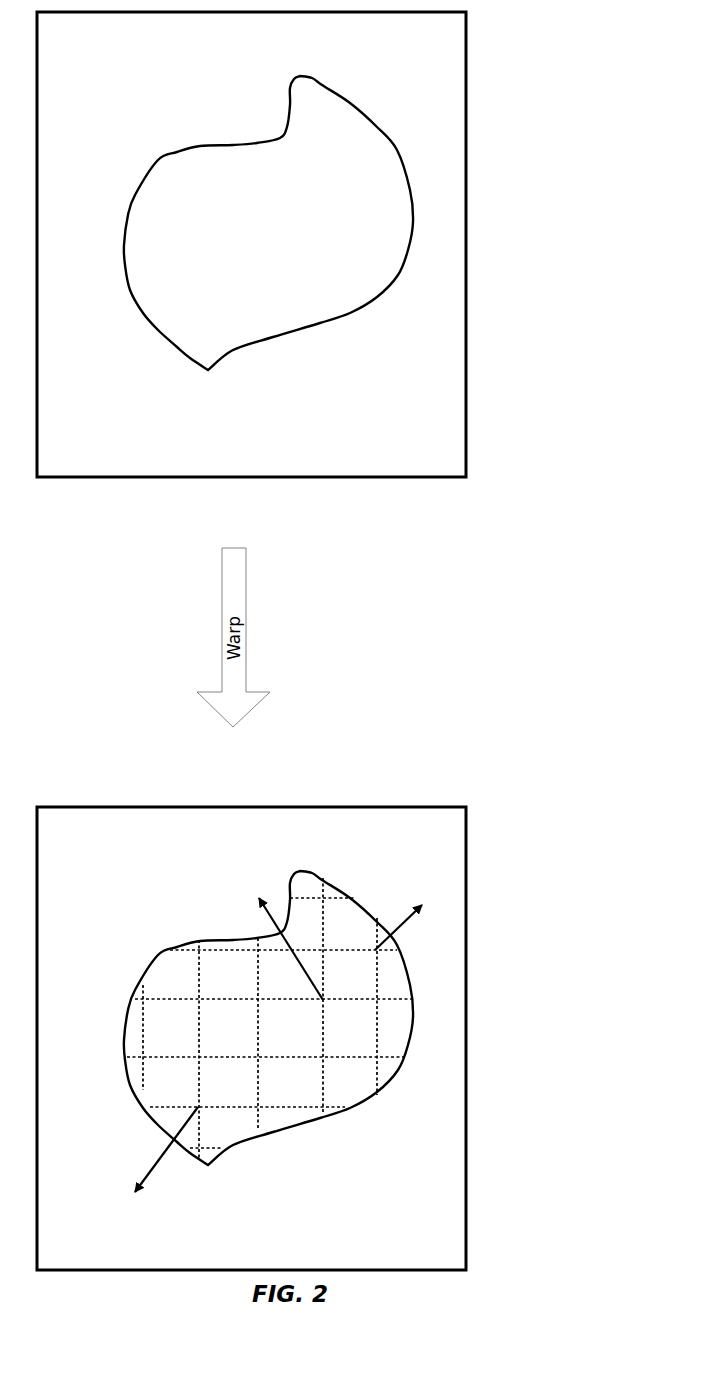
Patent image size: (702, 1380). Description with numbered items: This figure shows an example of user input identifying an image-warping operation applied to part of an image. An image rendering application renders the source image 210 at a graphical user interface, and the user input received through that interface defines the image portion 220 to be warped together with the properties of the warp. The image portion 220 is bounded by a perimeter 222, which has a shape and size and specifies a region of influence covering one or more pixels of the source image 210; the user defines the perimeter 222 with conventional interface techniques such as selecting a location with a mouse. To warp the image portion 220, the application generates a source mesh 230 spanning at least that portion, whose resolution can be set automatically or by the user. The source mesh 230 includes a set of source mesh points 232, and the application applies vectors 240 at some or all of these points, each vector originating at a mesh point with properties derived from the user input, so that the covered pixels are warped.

The source image 210 is at (466, 244).
The image portion 220 is at (367, 253).
The perimeter 222 is at (336, 620).
The source mesh 230 is at (323, 1080).
The source mesh points 232 is at (323, 950).
The vectors 240 is at (266, 898).